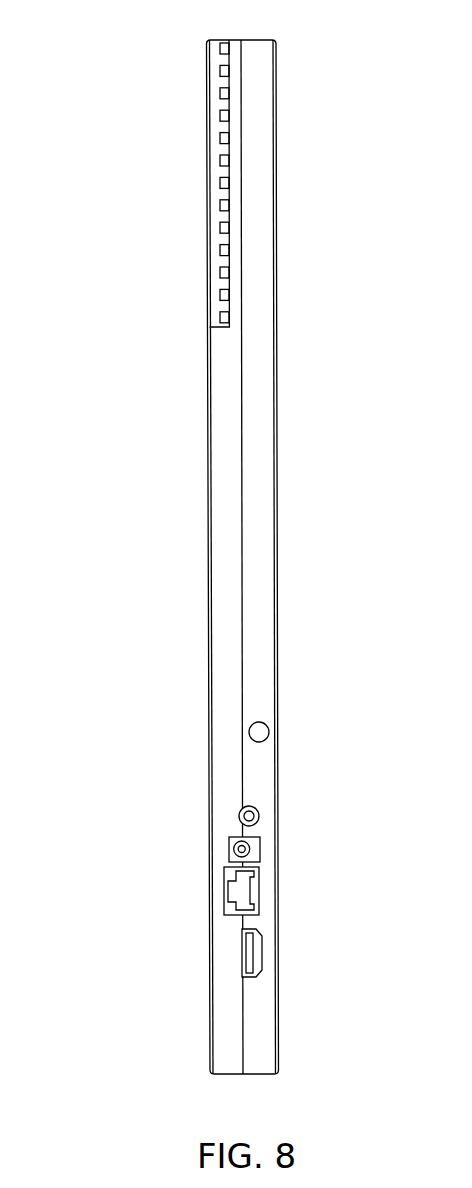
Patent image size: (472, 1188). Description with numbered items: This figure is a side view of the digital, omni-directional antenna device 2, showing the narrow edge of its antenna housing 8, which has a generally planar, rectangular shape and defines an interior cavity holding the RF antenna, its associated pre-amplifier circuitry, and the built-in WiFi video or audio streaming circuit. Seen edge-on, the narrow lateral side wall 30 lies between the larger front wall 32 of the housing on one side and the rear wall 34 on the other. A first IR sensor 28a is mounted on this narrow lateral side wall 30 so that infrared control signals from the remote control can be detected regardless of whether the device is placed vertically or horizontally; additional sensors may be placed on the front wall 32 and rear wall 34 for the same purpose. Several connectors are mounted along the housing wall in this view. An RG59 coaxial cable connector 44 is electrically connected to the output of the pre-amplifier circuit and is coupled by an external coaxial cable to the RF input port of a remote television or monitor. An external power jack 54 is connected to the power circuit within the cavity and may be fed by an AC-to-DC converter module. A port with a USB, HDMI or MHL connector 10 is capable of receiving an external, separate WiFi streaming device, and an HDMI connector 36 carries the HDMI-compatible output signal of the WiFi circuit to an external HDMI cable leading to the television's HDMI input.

The antenna device 2 is at (103, 70).
The antenna housing 8 is at (276, 120).
The USB, HDMI or MHL connector 10 is at (225, 890).
The first IR sensor 28a is at (269, 731).
The narrow lateral side wall 30 is at (258, 199).
The front wall 32 is at (207, 505).
The rear wall 34 is at (277, 270).
The HDMI connector 36 is at (241, 948).
The RG59 coaxial cable connector 44 is at (259, 815).
The external power jack 54 is at (261, 851).